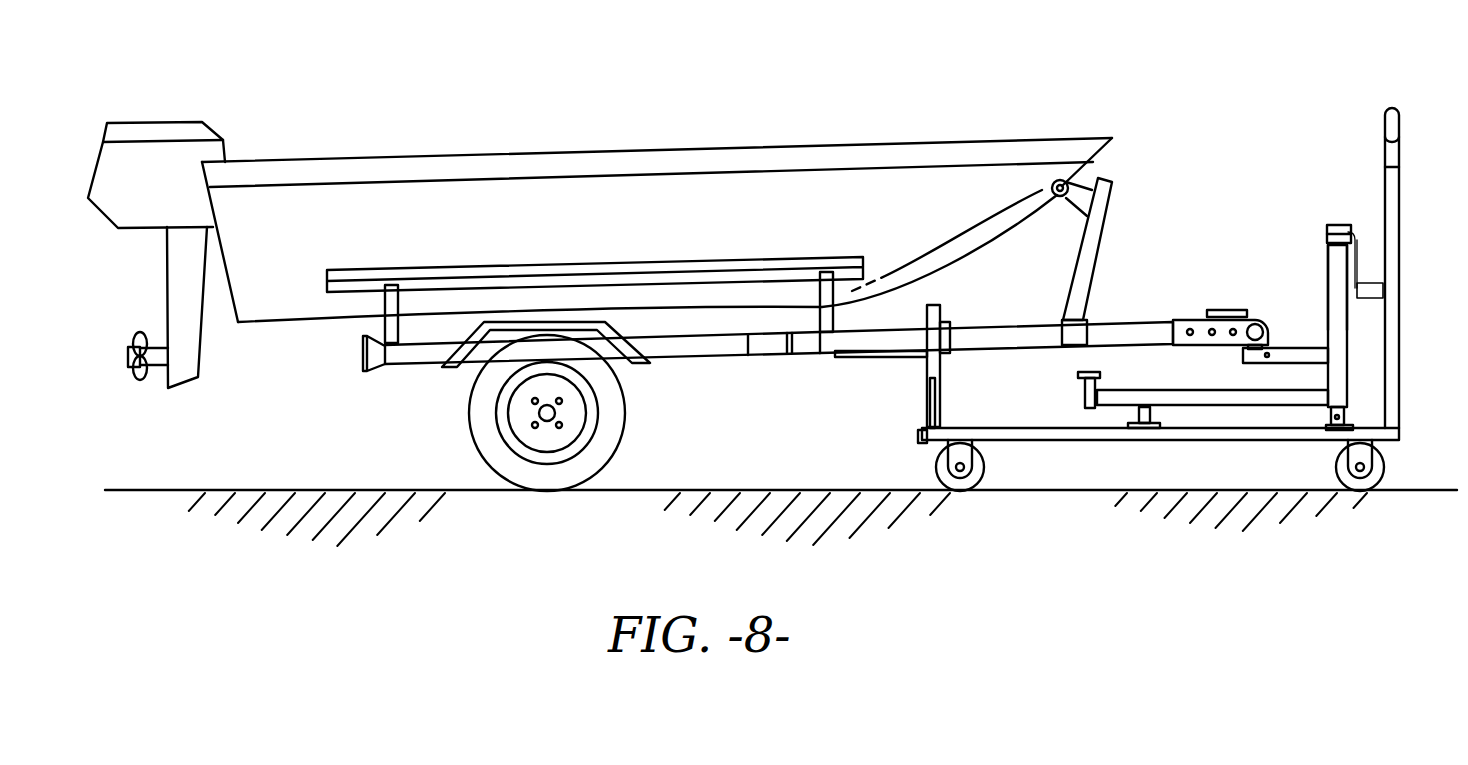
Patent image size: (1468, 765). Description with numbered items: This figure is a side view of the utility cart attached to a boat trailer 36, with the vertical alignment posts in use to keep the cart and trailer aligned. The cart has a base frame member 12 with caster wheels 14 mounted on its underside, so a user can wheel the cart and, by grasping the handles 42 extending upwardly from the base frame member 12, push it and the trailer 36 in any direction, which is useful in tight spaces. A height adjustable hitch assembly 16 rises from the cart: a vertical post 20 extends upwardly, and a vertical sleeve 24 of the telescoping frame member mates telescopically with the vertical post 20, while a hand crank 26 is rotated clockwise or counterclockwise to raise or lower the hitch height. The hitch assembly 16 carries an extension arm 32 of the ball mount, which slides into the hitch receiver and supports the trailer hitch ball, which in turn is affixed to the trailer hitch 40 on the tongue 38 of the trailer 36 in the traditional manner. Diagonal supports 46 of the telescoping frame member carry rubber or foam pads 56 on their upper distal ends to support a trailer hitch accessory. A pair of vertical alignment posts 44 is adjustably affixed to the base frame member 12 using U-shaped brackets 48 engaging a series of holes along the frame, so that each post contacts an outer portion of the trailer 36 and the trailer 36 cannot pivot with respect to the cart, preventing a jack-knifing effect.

The base frame member 12 is at (1210, 435).
The caster wheels 14 is at (973, 477).
The height adjustable hitch assembly 16 is at (1337, 280).
The vertical post 20 is at (1345, 415).
The vertical sleeve 24 is at (1337, 330).
The hand crank 26 is at (1376, 290).
The extension arm 32 is at (1290, 355).
The trailer 36 is at (693, 347).
The tongue 38 is at (996, 309).
The trailer hitch 40 is at (1257, 317).
The handles 42 is at (1400, 122).
The vertical alignment posts 44 is at (942, 407).
The diagonal supports 46 is at (1265, 397).
The U-shaped brackets 48 is at (923, 427).
The rubber or foam pads 56 is at (1085, 398).